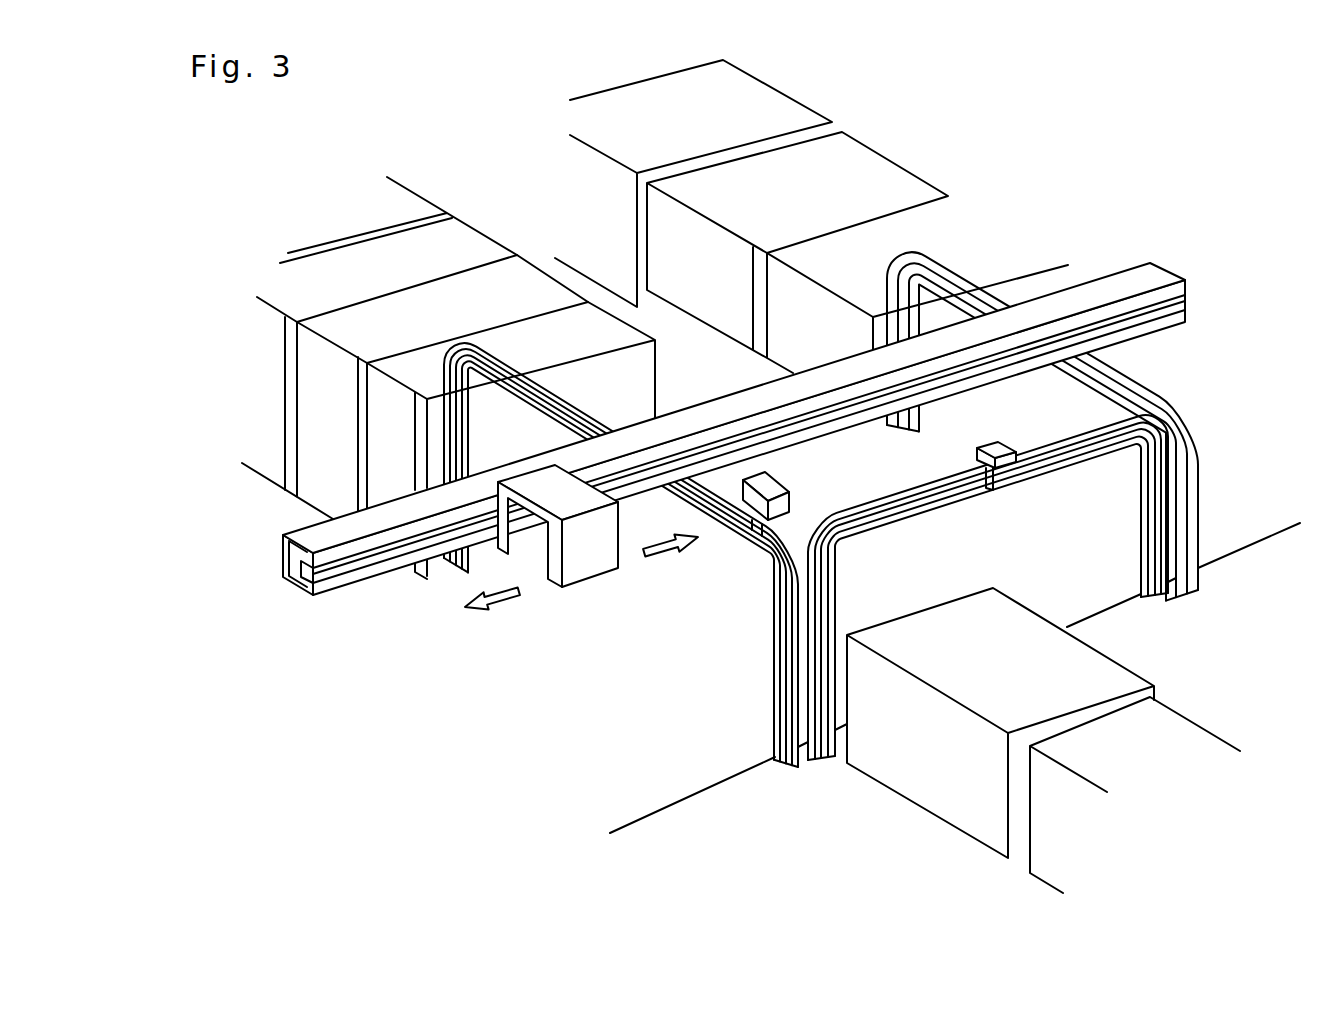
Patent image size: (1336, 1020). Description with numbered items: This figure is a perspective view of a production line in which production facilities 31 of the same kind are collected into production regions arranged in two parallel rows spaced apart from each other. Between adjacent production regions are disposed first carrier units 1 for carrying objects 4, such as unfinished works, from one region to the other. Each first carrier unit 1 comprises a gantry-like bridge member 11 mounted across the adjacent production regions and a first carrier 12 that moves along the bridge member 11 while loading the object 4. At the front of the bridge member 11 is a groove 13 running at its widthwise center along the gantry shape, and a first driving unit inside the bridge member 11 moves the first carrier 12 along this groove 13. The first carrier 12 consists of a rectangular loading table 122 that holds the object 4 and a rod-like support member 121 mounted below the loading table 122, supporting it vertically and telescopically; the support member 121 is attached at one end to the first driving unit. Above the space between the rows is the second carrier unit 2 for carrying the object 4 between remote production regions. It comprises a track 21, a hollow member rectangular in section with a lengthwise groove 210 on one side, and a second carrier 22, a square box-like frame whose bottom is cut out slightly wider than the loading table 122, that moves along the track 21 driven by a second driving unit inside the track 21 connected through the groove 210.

The first carrier unit 1 is at (869, 509).
The second carrier unit 2 is at (1102, 255).
The object 4 is at (777, 477).
The bridge member 11 is at (1148, 497).
The first carrier 12 is at (1023, 442).
The groove 13 is at (1167, 550).
The track 21 is at (1158, 278).
The second carrier 22 is at (590, 573).
The production facilities 31 is at (403, 205).
The support member 121 is at (975, 460).
The loading table 122 is at (993, 443).
The groove 210 is at (1192, 297).